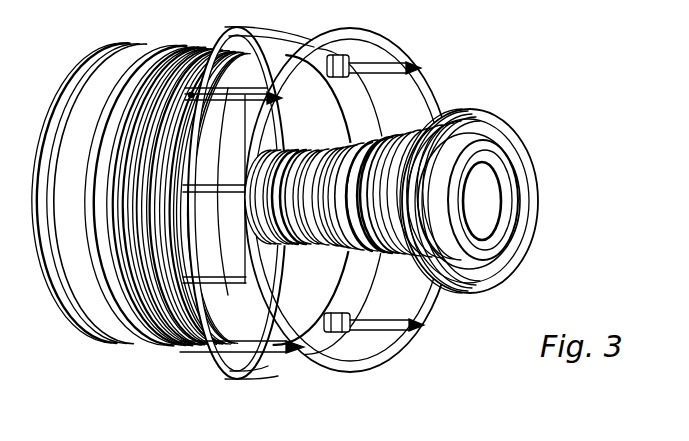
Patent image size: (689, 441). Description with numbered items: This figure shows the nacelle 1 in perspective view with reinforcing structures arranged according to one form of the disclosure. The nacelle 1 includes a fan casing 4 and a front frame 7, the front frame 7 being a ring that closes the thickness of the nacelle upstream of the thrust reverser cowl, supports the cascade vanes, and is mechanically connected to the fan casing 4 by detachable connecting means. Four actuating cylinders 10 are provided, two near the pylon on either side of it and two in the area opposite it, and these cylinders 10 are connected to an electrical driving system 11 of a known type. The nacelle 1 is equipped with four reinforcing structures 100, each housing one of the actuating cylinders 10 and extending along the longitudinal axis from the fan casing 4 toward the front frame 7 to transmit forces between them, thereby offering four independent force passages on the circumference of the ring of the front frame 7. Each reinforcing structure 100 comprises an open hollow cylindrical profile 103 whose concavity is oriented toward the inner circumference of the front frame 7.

The nacelle 1 is at (295, 190).
The fan casing 4 is at (128, 72).
The front frame 7 is at (416, 98).
The actuating cylinders 10 is at (421, 62).
The electrical driving system 11 is at (336, 56).
The reinforcing structure 100 is at (430, 328).
The open hollow cylindrical profile 103 is at (383, 70).